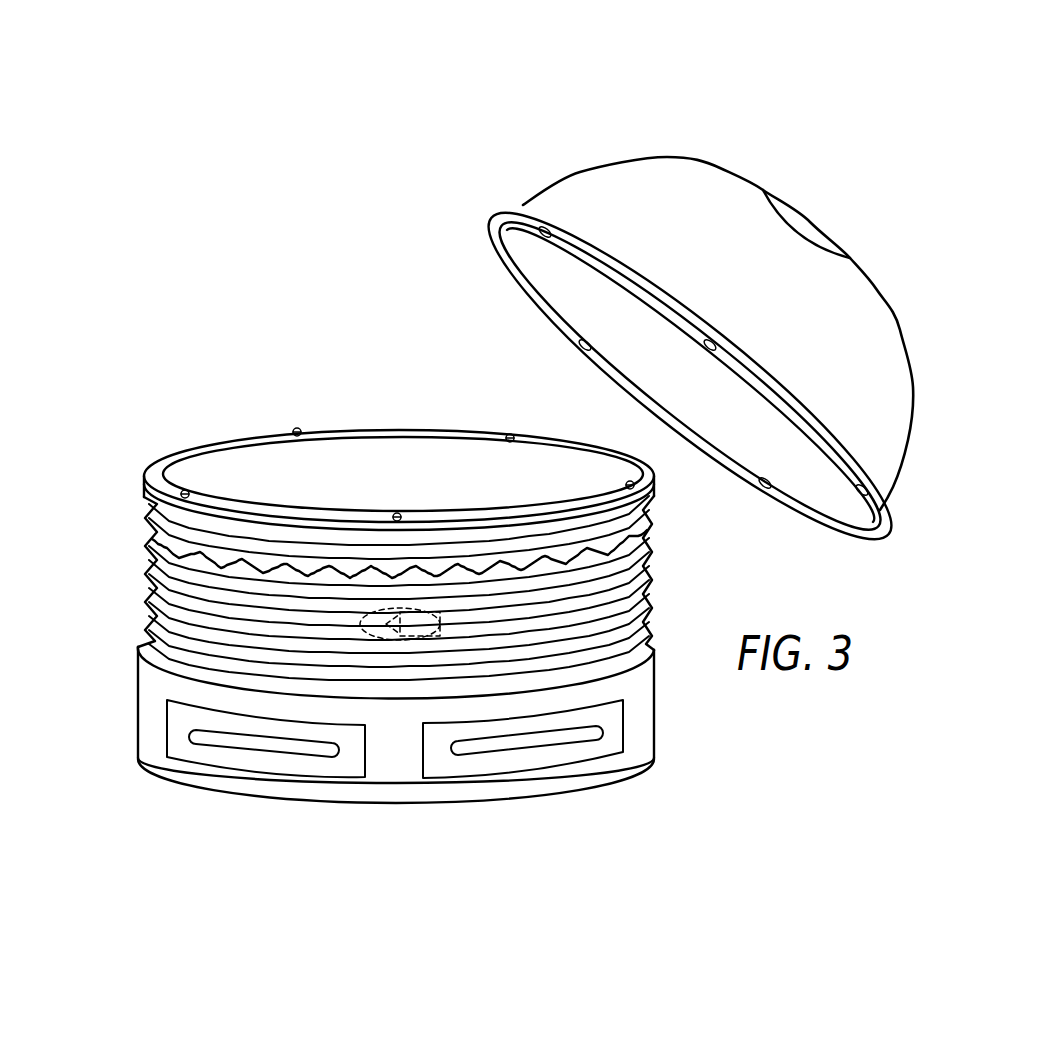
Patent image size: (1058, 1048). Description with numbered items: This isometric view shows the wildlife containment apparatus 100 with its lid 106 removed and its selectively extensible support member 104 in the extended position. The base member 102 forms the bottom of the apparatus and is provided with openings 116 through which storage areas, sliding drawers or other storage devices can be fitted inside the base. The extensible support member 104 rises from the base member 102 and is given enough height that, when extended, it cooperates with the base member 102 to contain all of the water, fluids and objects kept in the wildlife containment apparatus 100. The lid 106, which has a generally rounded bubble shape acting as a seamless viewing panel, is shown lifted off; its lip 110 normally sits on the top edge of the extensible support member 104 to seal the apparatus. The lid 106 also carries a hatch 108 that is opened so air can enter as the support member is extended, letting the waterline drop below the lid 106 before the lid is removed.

The wildlife containment apparatus 100 is at (337, 337).
The base member 102 is at (122, 718).
The selectively extensible support member 104 is at (136, 576).
The lid 106 is at (668, 145).
The hatch 108 is at (812, 226).
The lip 110 is at (517, 201).
The openings 116 is at (466, 768).